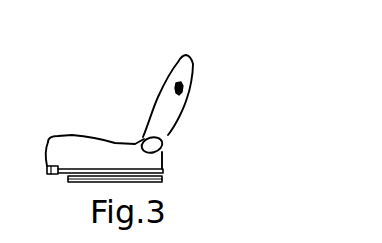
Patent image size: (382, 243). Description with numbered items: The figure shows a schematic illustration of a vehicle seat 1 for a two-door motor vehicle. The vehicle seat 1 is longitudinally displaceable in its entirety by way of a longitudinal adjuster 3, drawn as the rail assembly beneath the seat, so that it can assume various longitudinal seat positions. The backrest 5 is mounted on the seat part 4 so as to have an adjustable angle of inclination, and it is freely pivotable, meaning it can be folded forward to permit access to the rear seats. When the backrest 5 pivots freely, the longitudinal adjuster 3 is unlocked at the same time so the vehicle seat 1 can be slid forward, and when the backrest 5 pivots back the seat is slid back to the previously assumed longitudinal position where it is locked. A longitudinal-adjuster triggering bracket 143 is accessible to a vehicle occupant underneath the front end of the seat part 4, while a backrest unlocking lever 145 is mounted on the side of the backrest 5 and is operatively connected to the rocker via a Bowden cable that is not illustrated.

The vehicle seat 1 is at (120, 91).
The longitudinal adjuster 3 is at (166, 171).
The seat part 4 is at (80, 158).
The backrest 5 is at (172, 106).
The longitudinal-adjuster triggering bracket 143 is at (47, 170).
The backrest unlocking lever 145 is at (174, 110).